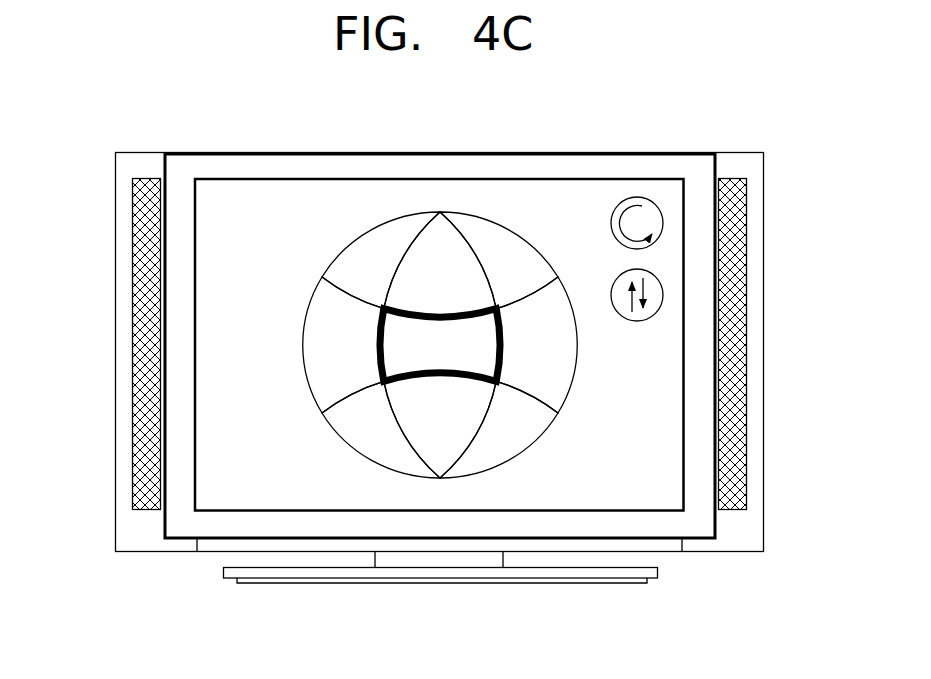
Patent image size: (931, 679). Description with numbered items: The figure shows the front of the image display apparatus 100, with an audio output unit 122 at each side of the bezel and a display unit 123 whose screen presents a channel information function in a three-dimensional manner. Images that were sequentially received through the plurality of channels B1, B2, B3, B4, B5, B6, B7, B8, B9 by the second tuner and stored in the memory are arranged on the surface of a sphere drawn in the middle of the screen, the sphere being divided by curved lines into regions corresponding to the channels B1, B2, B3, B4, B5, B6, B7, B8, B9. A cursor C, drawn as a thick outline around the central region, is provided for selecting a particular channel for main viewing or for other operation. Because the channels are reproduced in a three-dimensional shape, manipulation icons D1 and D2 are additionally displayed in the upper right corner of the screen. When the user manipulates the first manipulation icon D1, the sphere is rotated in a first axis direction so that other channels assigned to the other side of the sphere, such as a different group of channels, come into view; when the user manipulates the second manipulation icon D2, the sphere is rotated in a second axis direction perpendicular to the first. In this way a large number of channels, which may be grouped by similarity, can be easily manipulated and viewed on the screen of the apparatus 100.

The image display apparatus 100 is at (140, 141).
The audio output unit 122 is at (132, 238).
The display unit 123 is at (248, 175).
The channel B1 is at (370, 245).
The channel B2 is at (437, 222).
The channel B3 is at (508, 247).
The channel B4 is at (317, 343).
The channel B5 is at (480, 360).
The channel B6 is at (563, 350).
The channel B7 is at (378, 448).
The channel B8 is at (437, 457).
The channel B9 is at (503, 448).
The cursor C is at (503, 330).
The first manipulation icon D1 is at (657, 218).
The second manipulation icon D2 is at (657, 292).